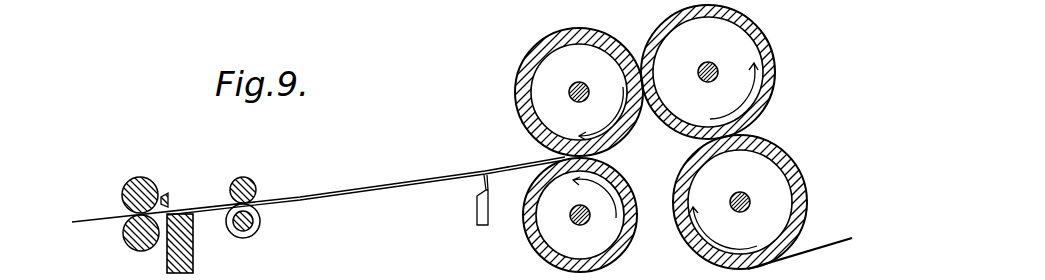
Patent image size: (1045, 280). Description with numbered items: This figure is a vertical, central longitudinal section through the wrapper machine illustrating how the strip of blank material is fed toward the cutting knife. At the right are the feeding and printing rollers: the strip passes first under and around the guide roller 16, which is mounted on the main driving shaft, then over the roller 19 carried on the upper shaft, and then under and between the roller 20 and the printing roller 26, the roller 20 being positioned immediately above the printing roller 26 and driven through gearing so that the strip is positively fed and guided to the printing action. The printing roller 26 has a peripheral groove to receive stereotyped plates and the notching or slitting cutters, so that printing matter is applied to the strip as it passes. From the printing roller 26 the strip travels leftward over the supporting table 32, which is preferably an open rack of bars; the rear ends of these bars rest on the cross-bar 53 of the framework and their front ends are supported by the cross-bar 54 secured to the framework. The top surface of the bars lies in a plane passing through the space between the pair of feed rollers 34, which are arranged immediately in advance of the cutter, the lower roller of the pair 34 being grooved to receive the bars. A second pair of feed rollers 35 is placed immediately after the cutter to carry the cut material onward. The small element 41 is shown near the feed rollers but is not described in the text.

The guide roller 16 is at (787, 153).
The roller 19 is at (772, 29).
The roller 20 is at (584, 28).
The printing roller 26 is at (524, 229).
The supporting table 32 is at (365, 191).
The feed rollers 34 is at (251, 184).
The feed rollers 35 is at (150, 181).
The guide 41 is at (169, 197).
The cross-bar 53 is at (193, 258).
The cross-bar 54 is at (477, 216).